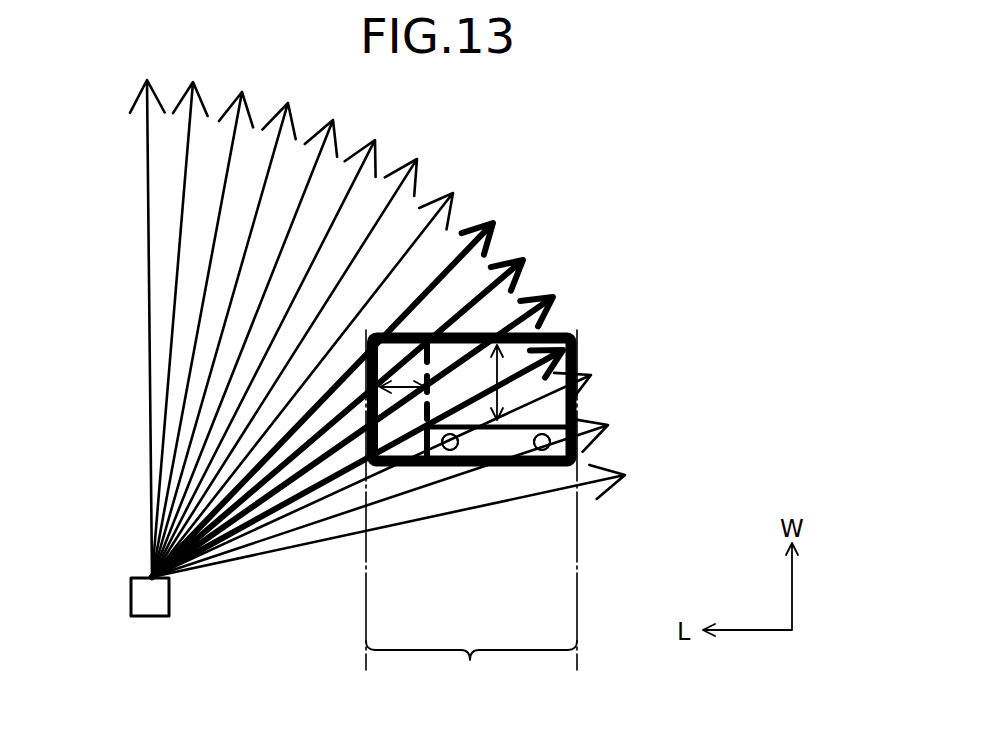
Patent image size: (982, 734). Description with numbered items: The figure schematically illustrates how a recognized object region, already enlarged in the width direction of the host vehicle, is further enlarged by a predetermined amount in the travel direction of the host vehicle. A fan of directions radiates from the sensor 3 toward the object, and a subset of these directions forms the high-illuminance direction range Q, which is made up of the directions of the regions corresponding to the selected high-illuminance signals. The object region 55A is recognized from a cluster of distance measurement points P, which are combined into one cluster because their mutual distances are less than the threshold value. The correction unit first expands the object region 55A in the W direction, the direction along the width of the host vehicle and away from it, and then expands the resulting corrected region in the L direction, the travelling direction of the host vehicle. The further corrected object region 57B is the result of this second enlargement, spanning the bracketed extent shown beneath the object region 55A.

The sensor 3 is at (142, 597).
The object region 55A is at (516, 462).
The further corrected object region 57B is at (470, 332).
The distance measurement points P is at (455, 450).
The high-illuminance direction range Q is at (492, 206).